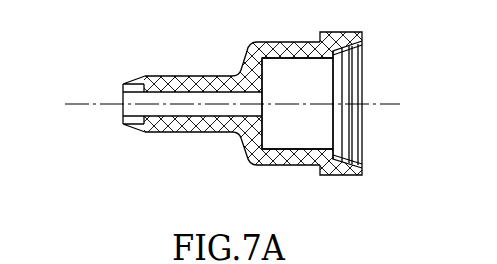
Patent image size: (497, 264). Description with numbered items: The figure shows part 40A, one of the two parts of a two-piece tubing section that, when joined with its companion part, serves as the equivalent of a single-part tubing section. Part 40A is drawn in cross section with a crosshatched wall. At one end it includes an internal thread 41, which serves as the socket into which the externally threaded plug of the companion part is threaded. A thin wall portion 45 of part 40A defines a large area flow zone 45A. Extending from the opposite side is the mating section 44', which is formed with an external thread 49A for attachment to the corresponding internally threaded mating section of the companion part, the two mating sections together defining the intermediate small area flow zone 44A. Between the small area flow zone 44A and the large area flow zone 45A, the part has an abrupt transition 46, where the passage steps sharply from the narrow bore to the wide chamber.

The part 40A is at (165, 38).
The internal thread 41 is at (355, 89).
The mating section 44' is at (367, 120).
The small area flow zone 44A is at (222, 109).
The thin wall portion 45 is at (298, 42).
The large area flow zone 45A is at (300, 92).
The abrupt transition 46 is at (266, 140).
The external thread 49A is at (135, 126).